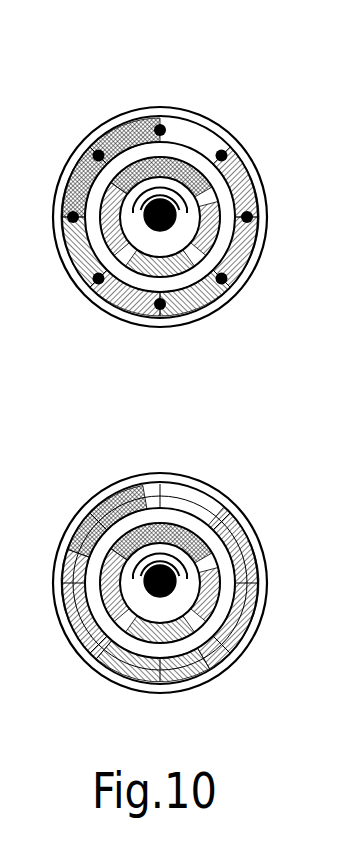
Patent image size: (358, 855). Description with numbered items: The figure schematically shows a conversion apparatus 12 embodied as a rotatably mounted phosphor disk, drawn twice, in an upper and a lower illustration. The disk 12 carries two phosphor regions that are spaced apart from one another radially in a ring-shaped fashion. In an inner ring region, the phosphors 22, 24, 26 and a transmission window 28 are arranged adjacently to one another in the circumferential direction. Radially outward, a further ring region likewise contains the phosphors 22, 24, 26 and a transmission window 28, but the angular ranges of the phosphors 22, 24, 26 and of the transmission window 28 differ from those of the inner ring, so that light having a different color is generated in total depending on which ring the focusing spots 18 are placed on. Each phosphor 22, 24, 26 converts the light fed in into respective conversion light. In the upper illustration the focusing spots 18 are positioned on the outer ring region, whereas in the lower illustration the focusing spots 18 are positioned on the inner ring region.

The conversion apparatus 12 is at (148, 107).
The focusing spots 18 is at (162, 408).
The phosphor 22 is at (247, 177).
The phosphor 24 is at (108, 243).
The phosphor 26 is at (182, 160).
The transmission window 28 is at (197, 137).